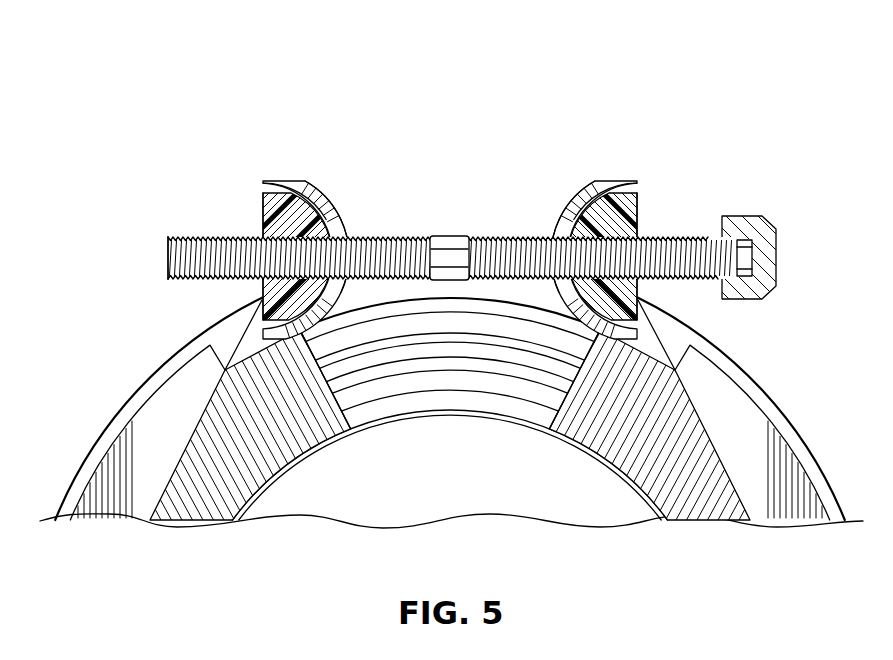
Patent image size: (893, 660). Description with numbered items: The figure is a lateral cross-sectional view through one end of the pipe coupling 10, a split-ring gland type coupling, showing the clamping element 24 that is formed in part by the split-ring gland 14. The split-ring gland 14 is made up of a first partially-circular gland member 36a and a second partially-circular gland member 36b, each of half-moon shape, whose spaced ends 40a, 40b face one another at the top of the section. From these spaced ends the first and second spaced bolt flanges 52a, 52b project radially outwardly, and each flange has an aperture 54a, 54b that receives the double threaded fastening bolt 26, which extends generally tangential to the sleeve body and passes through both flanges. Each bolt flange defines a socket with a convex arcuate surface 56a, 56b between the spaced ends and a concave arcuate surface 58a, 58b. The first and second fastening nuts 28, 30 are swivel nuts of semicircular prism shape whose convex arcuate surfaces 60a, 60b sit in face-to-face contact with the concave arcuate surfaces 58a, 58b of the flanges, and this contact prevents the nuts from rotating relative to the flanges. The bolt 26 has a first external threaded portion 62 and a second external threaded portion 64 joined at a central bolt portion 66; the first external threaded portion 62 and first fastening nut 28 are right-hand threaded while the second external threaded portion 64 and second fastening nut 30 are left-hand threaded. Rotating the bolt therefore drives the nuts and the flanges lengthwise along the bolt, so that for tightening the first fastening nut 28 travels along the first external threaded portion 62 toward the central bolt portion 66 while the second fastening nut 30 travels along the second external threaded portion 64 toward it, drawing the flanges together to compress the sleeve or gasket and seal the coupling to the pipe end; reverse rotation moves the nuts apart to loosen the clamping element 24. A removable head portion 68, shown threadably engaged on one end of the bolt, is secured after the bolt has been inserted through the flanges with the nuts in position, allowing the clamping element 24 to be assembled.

The pipe coupling 10 is at (445, 276).
The split-ring gland 14 is at (445, 413).
The clamping element 24 is at (292, 228).
The double threaded fastening bolt 26 is at (433, 276).
The first fastening nut 28 is at (636, 222).
The second fastening nut 30 is at (268, 227).
The first partially-circular gland member 36a is at (815, 454).
The second partially-circular gland member 36b is at (70, 480).
The spaced end of first gland member 40a is at (548, 391).
The spaced end of second gland member 40b is at (352, 391).
The first spaced bolt flange 52a is at (593, 230).
The second spaced bolt flange 52b is at (337, 230).
The aperture 54a is at (557, 222).
The aperture 54b is at (348, 222).
The convex arcuate surface 56a is at (600, 180).
The convex arcuate surface 56b is at (291, 180).
The concave arcuate surface 58a is at (608, 249).
The concave arcuate surface 58b is at (292, 254).
The convex arcuate surface 60a is at (578, 198).
The convex arcuate surface 60b is at (332, 205).
The first external threaded portion 62 is at (698, 281).
The second external threaded portion 64 is at (195, 280).
The central bolt portion 66 is at (452, 236).
The removable head portion 68 is at (745, 225).